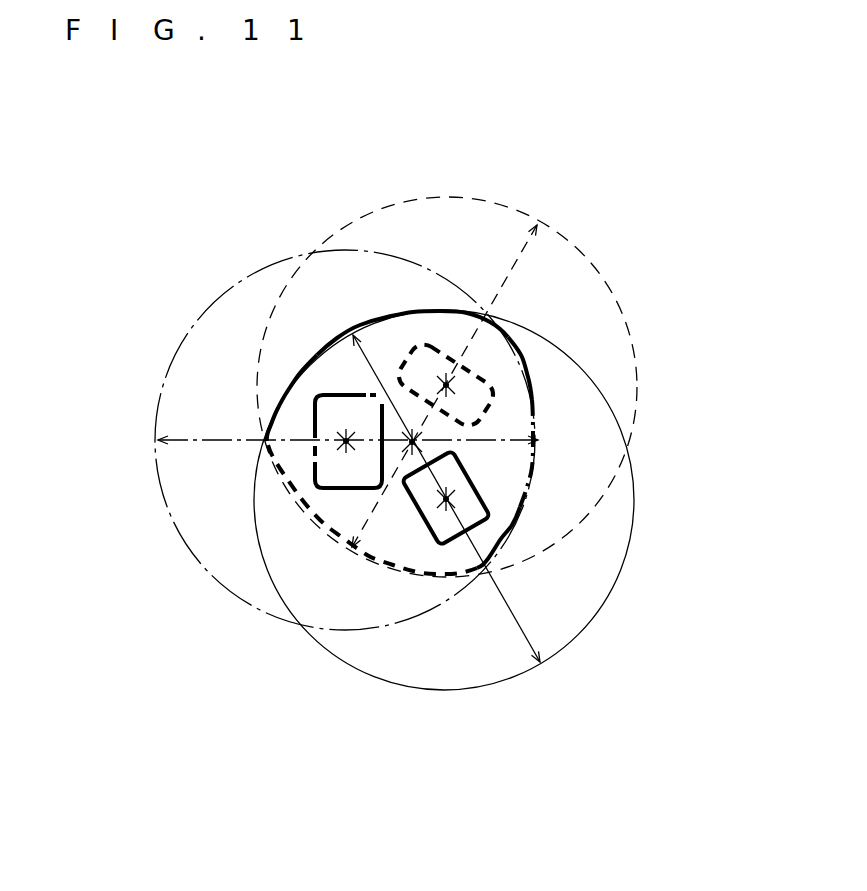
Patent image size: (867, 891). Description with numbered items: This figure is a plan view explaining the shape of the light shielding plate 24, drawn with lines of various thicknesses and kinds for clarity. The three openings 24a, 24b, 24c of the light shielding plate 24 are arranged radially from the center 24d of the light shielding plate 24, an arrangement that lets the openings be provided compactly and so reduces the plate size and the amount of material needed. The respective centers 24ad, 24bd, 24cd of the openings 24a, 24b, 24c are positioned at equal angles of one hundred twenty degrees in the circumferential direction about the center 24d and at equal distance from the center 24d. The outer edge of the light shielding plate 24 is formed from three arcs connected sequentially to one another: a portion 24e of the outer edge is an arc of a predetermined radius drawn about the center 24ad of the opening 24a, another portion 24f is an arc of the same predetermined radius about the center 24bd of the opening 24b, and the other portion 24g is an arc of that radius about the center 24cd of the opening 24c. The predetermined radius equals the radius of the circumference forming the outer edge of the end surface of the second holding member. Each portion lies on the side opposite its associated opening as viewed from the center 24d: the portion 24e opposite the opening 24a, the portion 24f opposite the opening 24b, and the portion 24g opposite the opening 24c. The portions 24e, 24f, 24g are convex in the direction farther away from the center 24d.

The light shielding plate 24 is at (333, 370).
The opening 24a is at (344, 468).
The center of the opening 24a 24ad is at (340, 446).
The opening 24b is at (490, 517).
The center of the opening 24b 24bd is at (463, 509).
The opening 24c is at (427, 368).
The center of the opening 24c 24cd is at (446, 382).
The center of the light shielding plate 24d is at (414, 440).
The portion of the outer edge 24e is at (522, 362).
The portion of the outer edge 24f is at (292, 435).
The portion of the outer edge 24g is at (391, 567).